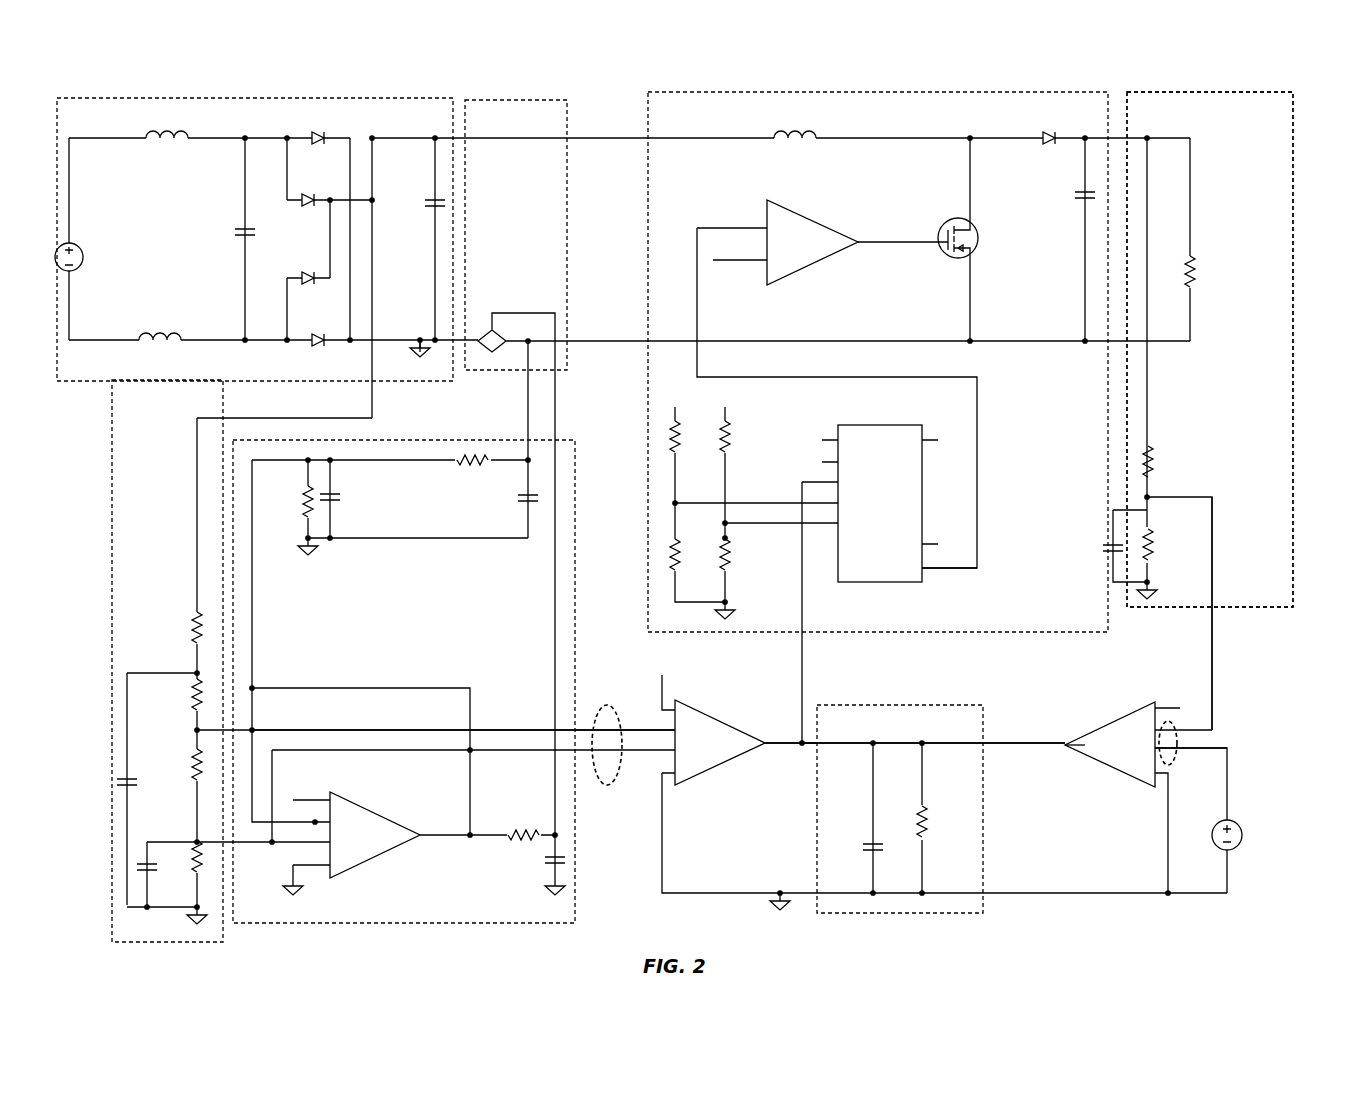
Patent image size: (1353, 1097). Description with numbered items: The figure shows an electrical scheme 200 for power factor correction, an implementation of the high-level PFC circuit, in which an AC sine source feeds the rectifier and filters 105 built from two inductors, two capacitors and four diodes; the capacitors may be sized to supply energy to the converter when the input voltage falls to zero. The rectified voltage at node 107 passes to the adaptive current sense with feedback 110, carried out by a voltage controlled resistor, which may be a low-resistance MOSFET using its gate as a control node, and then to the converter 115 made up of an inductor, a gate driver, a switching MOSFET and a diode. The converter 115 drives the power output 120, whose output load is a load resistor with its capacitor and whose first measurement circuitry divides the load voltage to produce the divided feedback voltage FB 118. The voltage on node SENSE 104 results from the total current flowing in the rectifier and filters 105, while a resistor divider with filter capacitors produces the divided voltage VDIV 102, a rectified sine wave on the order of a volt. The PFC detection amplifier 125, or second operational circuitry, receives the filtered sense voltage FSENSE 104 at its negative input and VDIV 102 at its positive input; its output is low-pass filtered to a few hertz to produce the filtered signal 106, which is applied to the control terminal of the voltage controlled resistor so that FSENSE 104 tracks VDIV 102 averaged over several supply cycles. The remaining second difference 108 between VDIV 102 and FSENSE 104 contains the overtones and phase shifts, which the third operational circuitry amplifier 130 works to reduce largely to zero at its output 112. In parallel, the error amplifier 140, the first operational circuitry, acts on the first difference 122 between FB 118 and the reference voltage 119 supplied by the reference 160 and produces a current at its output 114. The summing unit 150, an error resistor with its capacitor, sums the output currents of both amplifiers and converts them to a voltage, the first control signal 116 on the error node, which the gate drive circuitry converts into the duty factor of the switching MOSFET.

The electrical scheme 200 is at (1335, 98).
The rectifier and filters 105 is at (100, 384).
The filtered output of amplifier X26 106 is at (454, 679).
The rectified voltage node 107 is at (458, 128).
The second difference 108 is at (606, 707).
The adaptive current sense with feedback 110 is at (538, 97).
The output of first amplifier 112 is at (748, 752).
The output of error amplifier 114 is at (1080, 752).
The converter 115 is at (677, 90).
The first control signal 116 is at (805, 690).
The FB 118 is at (1214, 681).
The reference signal 119 is at (1232, 753).
The power output 120 is at (1197, 92).
The first difference 122 is at (1176, 741).
The PFC detection amplifier 125 is at (372, 866).
The amplifier 130 is at (679, 792).
The amplifier 140 is at (1150, 700).
The summing unit 150 is at (968, 698).
The reference 160 is at (1234, 851).
The VDIV 102 is at (254, 850).
The SENSE/FSENSE 104 is at (490, 728).